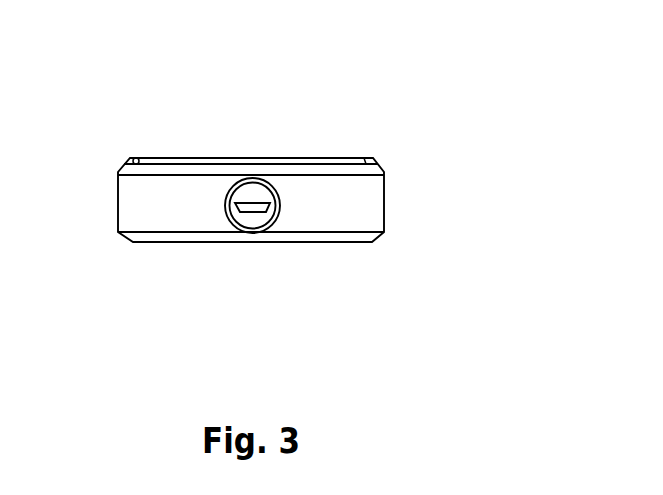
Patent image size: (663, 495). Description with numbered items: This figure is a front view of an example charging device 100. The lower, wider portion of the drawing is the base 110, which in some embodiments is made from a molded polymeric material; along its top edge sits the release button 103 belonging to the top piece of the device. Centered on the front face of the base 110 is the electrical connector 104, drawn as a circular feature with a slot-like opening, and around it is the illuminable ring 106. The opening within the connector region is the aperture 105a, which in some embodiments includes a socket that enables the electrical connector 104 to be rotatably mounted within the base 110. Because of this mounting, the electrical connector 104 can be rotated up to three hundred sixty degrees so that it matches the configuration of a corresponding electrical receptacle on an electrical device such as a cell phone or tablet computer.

The charging device 100 is at (303, 77).
The release button 103 is at (134, 161).
The electrical connector 104 is at (229, 216).
The aperture 105a is at (251, 214).
The illuminable ring 106 is at (270, 188).
The base 110 is at (384, 198).